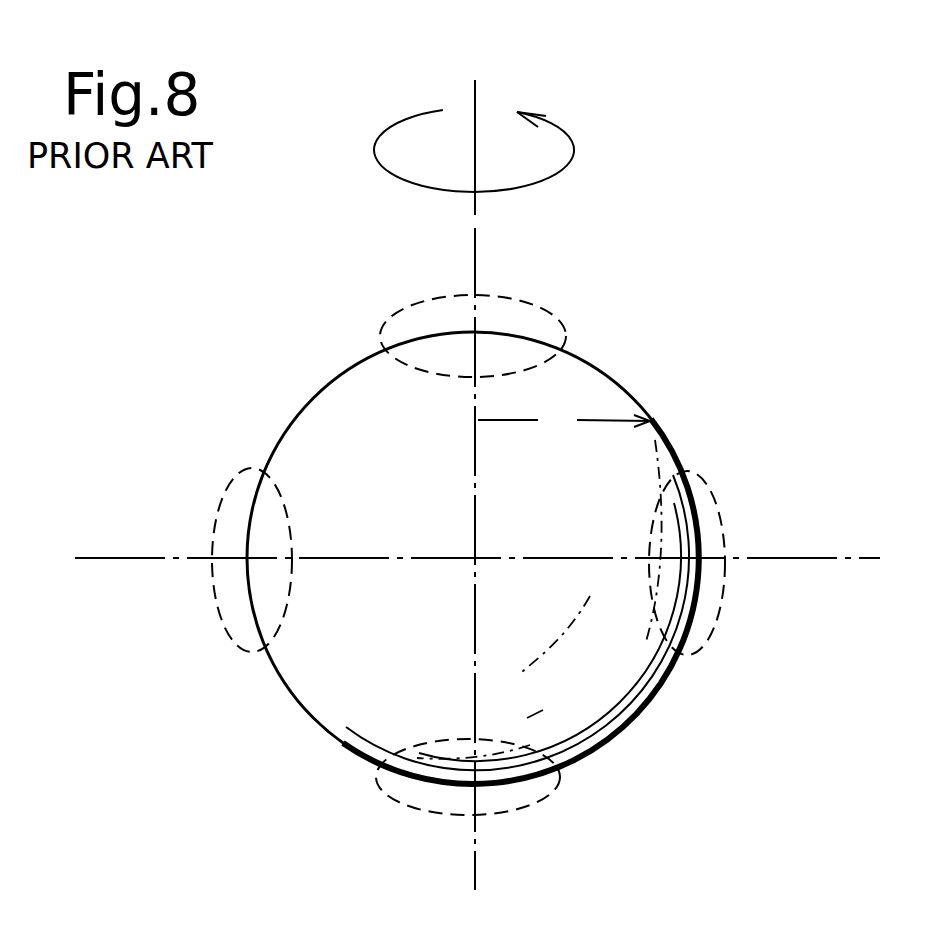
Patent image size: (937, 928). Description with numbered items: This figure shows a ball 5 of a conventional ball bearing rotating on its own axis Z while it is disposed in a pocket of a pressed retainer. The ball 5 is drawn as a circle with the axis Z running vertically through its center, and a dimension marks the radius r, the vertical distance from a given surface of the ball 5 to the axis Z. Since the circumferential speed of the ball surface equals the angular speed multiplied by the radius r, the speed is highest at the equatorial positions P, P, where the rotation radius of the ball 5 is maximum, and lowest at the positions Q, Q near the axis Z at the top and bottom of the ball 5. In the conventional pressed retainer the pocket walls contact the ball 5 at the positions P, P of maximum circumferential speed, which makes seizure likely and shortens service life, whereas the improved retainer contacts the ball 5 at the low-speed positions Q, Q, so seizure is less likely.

The ball 5 is at (340, 413).
The axis Z is at (479, 455).
The radius r is at (564, 418).
The positions P is at (221, 508).
The positions Q is at (408, 304).